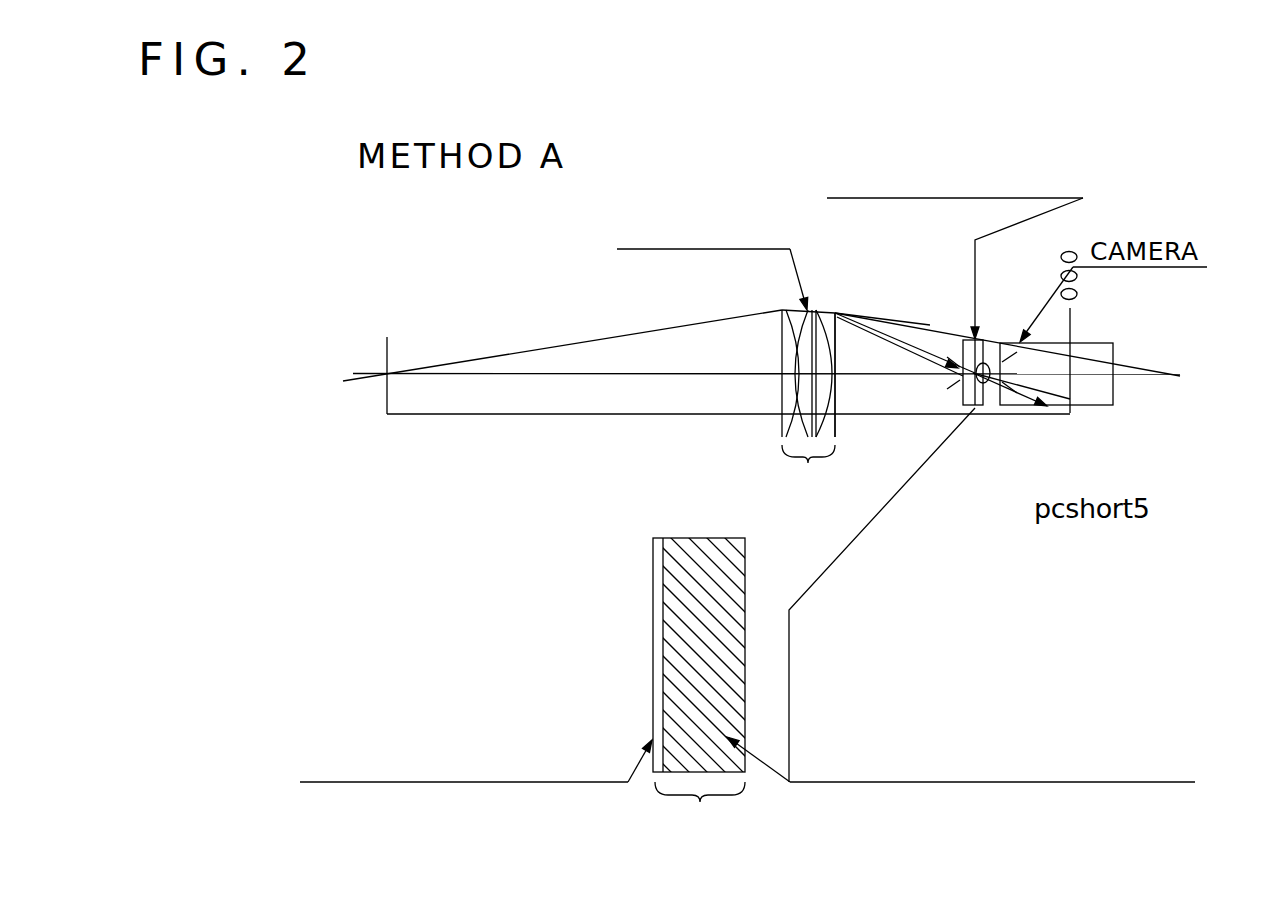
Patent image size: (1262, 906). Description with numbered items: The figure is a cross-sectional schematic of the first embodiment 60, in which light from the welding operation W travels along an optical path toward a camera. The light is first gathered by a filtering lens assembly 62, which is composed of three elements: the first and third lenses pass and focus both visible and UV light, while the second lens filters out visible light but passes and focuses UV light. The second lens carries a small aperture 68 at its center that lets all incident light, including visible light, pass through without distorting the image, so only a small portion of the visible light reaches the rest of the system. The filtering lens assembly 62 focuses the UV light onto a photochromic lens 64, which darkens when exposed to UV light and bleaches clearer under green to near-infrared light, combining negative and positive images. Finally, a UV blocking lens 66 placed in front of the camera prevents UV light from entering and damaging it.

The first embodiment 60 is at (775, 148).
The filtering lens assembly 62 is at (808, 463).
The photochromic lens 64 is at (982, 285).
The UV blocking lens 66 is at (910, 483).
The aperture 68 is at (843, 366).
The welding operation W is at (375, 368).